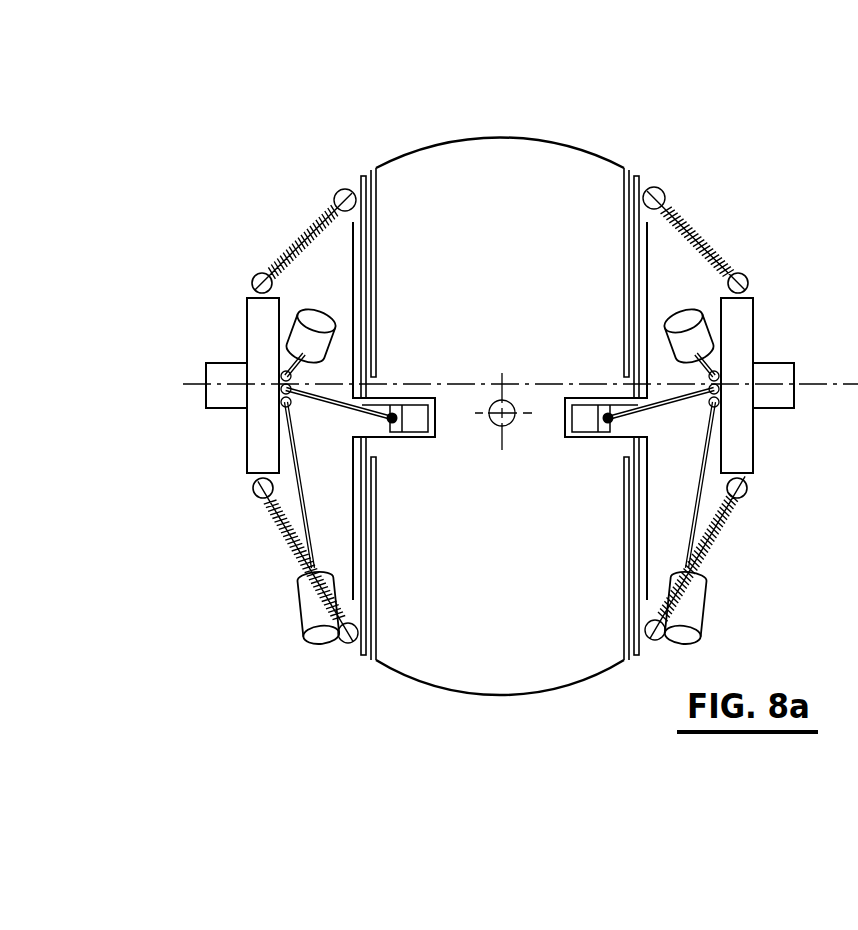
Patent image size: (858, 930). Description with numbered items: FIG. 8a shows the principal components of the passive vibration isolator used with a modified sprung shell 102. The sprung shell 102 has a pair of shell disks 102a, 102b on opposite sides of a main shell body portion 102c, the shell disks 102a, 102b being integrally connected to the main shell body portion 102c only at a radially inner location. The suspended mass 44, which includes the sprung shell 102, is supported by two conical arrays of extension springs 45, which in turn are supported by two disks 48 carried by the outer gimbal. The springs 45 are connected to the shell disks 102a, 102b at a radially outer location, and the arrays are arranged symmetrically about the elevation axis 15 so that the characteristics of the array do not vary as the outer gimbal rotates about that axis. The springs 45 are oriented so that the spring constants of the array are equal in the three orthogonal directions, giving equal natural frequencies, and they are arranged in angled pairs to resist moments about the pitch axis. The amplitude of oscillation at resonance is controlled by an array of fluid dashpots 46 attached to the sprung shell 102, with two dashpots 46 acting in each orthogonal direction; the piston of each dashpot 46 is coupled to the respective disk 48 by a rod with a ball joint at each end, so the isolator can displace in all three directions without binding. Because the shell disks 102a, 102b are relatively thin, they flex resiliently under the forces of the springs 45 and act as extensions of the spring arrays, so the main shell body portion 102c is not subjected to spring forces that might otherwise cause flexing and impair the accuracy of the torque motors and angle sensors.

The elevation axis 15 is at (193, 375).
The mass 44 is at (545, 374).
The extension springs 45 is at (299, 230).
The fluid dashpots 46 is at (323, 308).
The disks 48 is at (255, 430).
The sprung shell 102 is at (547, 374).
The shell disk 102a is at (643, 176).
The shell disk 102b is at (357, 177).
The main shell body portion 102c is at (555, 143).